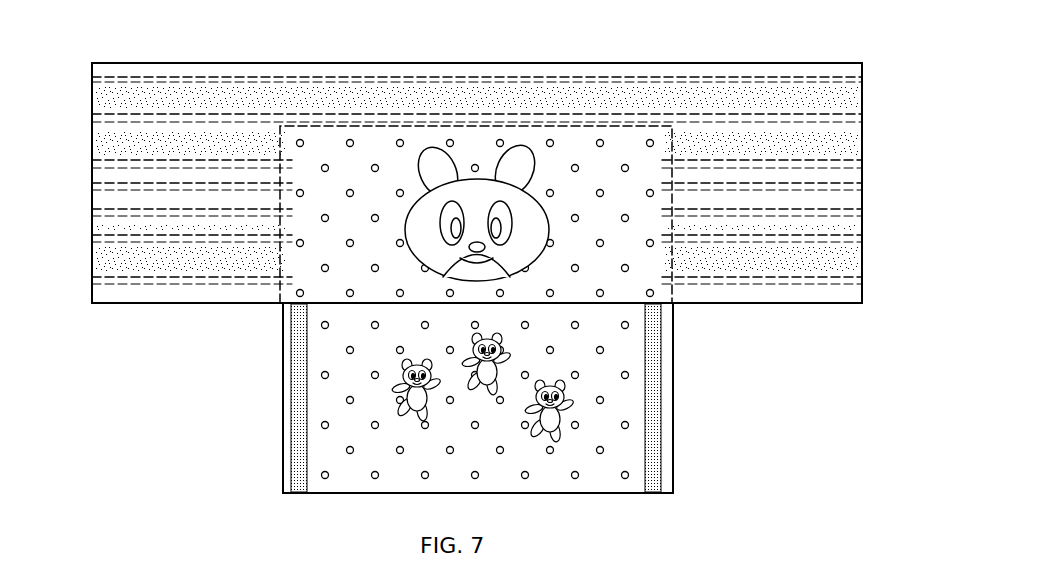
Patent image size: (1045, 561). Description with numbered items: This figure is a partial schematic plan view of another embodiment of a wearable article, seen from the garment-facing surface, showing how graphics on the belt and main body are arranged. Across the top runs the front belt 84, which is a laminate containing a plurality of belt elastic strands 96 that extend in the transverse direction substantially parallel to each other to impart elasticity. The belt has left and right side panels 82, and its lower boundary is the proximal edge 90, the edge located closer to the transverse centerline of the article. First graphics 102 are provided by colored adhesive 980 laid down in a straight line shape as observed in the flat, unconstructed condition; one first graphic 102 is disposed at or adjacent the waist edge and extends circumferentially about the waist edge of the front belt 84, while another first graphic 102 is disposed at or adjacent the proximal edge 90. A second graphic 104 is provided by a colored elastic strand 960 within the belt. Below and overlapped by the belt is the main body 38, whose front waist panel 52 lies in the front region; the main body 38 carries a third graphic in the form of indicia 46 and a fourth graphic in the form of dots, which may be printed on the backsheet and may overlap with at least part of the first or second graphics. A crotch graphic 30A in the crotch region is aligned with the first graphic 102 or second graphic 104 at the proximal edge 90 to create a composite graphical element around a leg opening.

The front belt 84 is at (768, 63).
The first graphic 102 is at (853, 94).
The colored adhesive 980 is at (853, 103).
The side panel 82 is at (853, 223).
The second graphic 104 is at (836, 242).
The belt elastic strand 96 is at (137, 76).
The colored elastic strand 960 is at (107, 145).
The front waist panel 52 is at (635, 280).
The indicia 46 is at (550, 232).
The proximal edge 90 is at (752, 304).
The crotch graphic 30A is at (298, 374).
The main body 38 is at (282, 420).